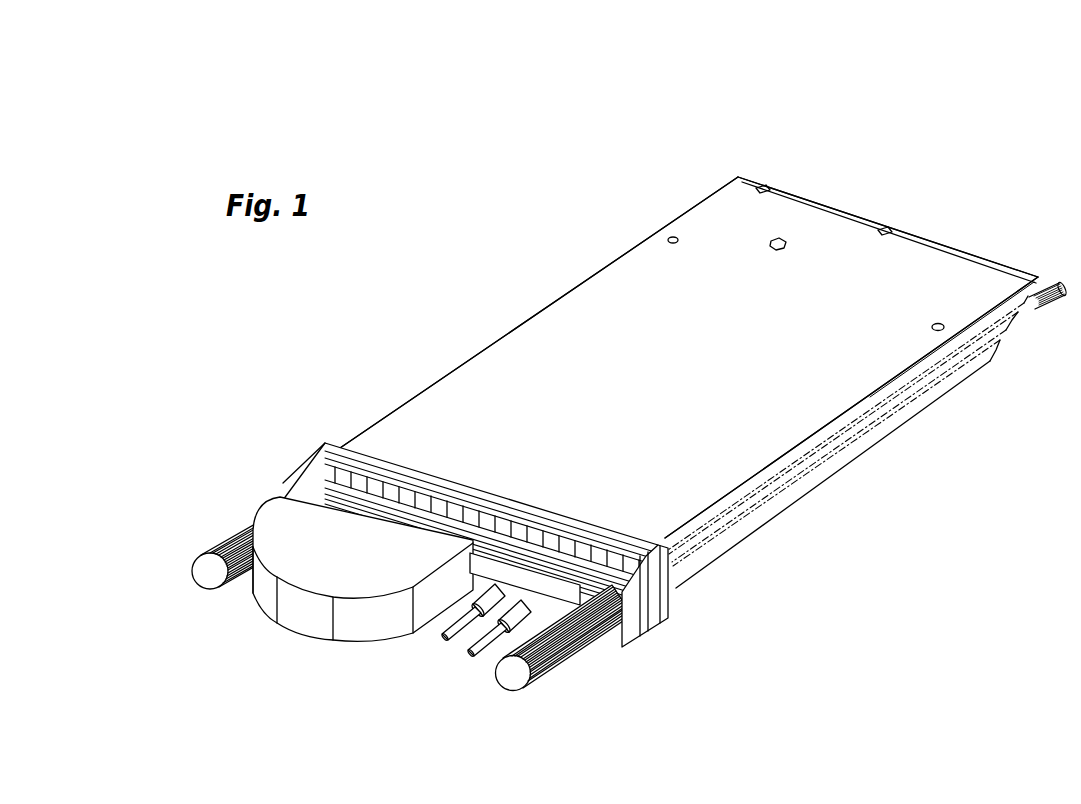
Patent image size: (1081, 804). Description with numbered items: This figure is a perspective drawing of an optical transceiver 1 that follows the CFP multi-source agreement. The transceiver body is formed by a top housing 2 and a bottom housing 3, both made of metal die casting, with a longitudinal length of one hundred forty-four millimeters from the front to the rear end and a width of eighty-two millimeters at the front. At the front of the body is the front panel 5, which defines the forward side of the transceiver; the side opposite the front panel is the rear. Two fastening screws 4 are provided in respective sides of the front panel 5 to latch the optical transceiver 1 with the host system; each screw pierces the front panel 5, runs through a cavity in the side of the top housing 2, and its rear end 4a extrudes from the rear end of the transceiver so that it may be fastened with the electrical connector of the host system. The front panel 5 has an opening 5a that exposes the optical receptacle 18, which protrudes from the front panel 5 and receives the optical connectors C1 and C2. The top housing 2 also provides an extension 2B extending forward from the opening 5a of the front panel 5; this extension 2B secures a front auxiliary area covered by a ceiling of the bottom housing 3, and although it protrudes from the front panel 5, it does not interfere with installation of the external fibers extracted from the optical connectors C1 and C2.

The optical transceiver 1 is at (792, 154).
The top housing 2 is at (572, 325).
The extension 2B is at (308, 610).
The bottom housing 3 is at (738, 541).
The fastening screw 4 is at (190, 562).
The rear end of fastening screw 4a is at (1040, 312).
The front panel 5 is at (283, 482).
The opening 5a is at (643, 633).
The optical receptacle 18 is at (577, 653).
The optical connector C1 is at (497, 598).
The optical connector C2 is at (517, 623).